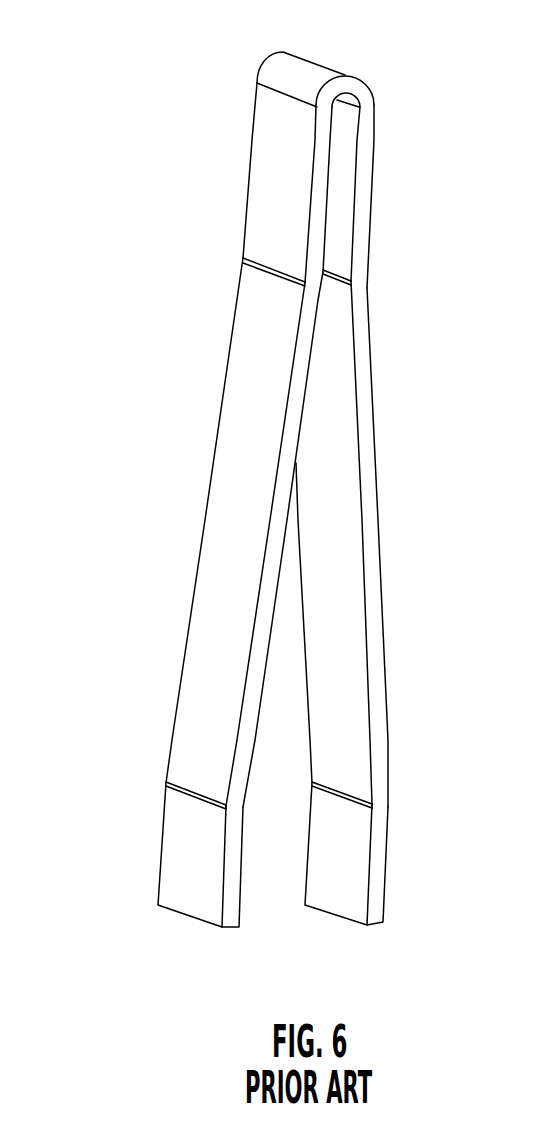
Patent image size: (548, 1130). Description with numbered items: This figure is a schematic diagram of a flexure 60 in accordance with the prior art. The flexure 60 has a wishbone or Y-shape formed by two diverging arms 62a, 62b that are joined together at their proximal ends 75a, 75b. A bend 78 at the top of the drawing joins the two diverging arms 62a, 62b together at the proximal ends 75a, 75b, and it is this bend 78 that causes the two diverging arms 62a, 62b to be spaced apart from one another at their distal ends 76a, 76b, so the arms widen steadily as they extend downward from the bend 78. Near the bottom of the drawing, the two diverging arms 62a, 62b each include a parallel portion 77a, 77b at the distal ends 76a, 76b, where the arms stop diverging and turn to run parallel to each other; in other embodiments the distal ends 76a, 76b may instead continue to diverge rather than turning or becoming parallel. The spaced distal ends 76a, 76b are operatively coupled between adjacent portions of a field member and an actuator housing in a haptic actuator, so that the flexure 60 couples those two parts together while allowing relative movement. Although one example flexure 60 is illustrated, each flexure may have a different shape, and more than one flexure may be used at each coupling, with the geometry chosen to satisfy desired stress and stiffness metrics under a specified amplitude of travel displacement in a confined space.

The flexure 60 is at (148, 117).
The bend 78 is at (328, 72).
The proximal end 75a is at (373, 200).
The proximal end 75b is at (250, 158).
The diverging arm 62a is at (374, 449).
The diverging arm 62b is at (217, 440).
The parallel portion 77a is at (388, 863).
The parallel portion 77b is at (163, 848).
The distal end 76a is at (383, 920).
The distal end 76b is at (157, 902).